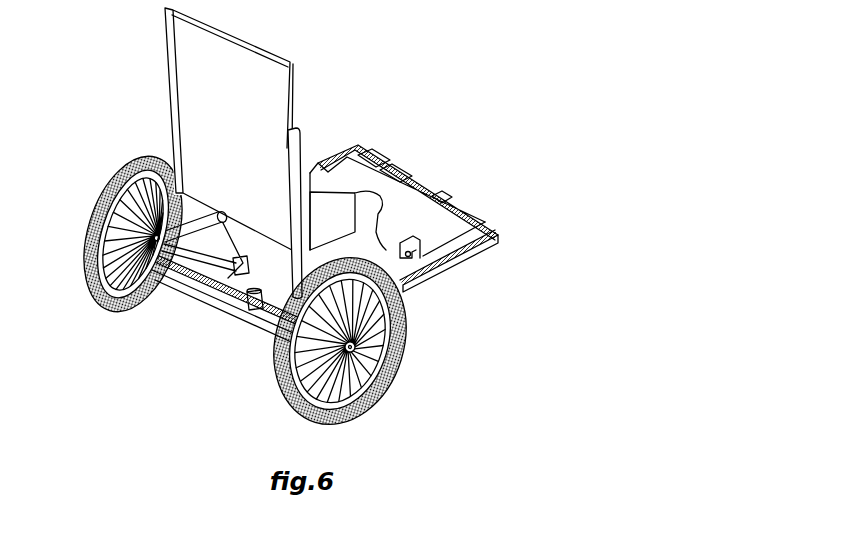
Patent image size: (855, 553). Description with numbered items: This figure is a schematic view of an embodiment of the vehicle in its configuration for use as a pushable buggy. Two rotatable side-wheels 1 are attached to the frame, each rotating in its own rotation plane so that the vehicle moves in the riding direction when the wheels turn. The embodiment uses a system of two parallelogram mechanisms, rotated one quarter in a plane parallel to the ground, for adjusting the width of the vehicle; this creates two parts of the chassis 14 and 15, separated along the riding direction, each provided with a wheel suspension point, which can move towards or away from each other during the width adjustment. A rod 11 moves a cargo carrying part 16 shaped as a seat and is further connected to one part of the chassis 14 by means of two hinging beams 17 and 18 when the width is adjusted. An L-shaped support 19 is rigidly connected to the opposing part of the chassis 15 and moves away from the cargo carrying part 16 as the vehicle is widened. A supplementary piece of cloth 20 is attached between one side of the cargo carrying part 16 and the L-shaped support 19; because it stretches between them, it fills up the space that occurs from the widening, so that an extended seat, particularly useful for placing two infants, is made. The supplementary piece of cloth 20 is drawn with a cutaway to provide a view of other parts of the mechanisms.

The side-wheel 1 is at (97, 300).
The rod 11 is at (262, 232).
The part of the chassis 14 is at (337, 152).
The part of the chassis 15 is at (473, 257).
The cargo carrying part 16 is at (205, 79).
The hinging beam 17 is at (385, 233).
The hinging beam 18 is at (222, 222).
The L-shaped support 19 is at (308, 201).
The supplementary piece of cloth 20 is at (288, 295).